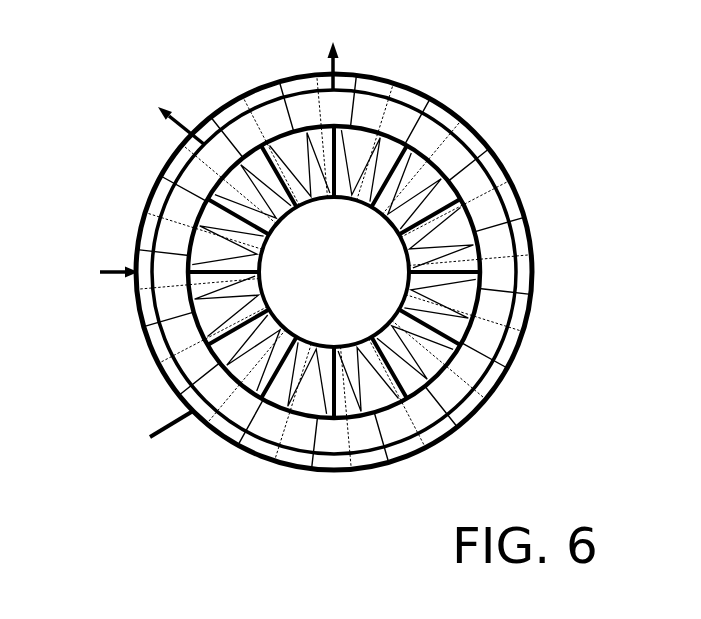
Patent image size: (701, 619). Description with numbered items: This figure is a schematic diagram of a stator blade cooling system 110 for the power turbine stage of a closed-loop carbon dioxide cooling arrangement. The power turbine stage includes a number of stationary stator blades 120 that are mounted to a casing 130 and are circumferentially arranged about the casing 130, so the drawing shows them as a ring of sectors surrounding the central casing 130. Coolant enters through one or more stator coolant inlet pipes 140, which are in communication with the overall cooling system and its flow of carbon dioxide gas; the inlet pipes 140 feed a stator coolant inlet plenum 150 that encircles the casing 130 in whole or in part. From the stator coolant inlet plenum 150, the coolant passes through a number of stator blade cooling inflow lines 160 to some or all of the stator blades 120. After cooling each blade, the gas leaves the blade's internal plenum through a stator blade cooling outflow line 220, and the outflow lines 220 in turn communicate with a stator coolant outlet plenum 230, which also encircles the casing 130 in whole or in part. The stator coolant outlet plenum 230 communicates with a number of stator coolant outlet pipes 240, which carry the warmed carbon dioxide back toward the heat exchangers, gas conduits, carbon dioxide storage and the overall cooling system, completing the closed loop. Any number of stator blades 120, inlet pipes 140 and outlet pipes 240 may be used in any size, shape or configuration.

The stator blade cooling system 110 is at (166, 35).
The stator blades 120 is at (333, 200).
The casing 130 is at (518, 241).
The stator coolant inlet pipe 140 is at (110, 268).
The stator coolant inlet plenum 150 is at (500, 385).
The stator blade cooling inflow lines 160 is at (273, 325).
The stator blade cooling outflow line 220 is at (226, 434).
The stator coolant outlet plenum 230 is at (366, 468).
The stator coolant outlet pipes 240 is at (329, 57).